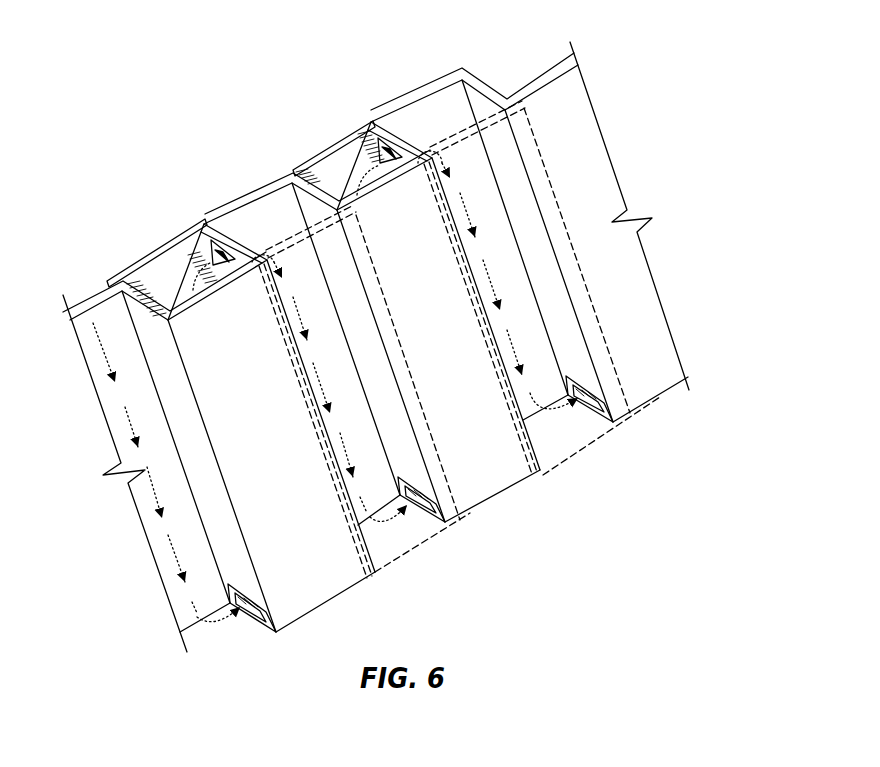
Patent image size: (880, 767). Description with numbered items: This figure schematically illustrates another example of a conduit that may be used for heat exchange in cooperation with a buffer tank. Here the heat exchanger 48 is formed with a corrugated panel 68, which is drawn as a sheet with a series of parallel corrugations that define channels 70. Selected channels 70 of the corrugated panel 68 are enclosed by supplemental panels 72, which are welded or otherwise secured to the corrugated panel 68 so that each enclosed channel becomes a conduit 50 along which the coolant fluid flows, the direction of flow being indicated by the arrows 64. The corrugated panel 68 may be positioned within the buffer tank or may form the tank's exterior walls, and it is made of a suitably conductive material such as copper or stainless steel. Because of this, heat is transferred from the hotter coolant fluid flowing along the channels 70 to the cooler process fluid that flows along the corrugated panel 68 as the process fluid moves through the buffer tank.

The heat exchanger 48 is at (636, 154).
The conduit 50 is at (189, 414).
The arrows 64 is at (124, 408).
The corrugated panel 68 is at (412, 96).
The channels 70 is at (178, 262).
The supplemental panels 72 is at (140, 256).